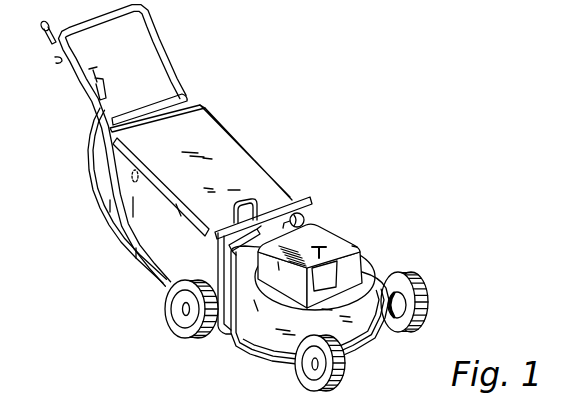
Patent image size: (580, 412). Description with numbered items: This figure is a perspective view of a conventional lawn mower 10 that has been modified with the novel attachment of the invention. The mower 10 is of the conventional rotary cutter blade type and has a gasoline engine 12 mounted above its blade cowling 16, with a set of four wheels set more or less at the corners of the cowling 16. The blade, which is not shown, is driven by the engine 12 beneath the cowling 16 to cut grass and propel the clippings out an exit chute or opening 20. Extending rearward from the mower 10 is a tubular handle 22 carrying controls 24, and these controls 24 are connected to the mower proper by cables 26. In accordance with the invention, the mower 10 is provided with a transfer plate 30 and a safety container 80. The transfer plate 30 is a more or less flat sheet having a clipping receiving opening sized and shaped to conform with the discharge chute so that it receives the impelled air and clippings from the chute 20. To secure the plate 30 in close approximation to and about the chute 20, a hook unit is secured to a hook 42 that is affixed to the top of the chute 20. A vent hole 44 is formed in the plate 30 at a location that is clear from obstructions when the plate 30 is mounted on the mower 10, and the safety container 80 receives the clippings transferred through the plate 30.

The mower 10 is at (387, 339).
The gasoline engine 12 is at (362, 242).
The blade cowling 16 is at (343, 330).
The exit chute 20 is at (212, 267).
The tubular handle 22 is at (154, 39).
The controls 24 is at (86, 82).
The cables 26 is at (89, 146).
The transfer plate 30 is at (313, 206).
The hook 42 is at (236, 247).
The vent hole 44 is at (305, 221).
The safety container 80 is at (205, 112).